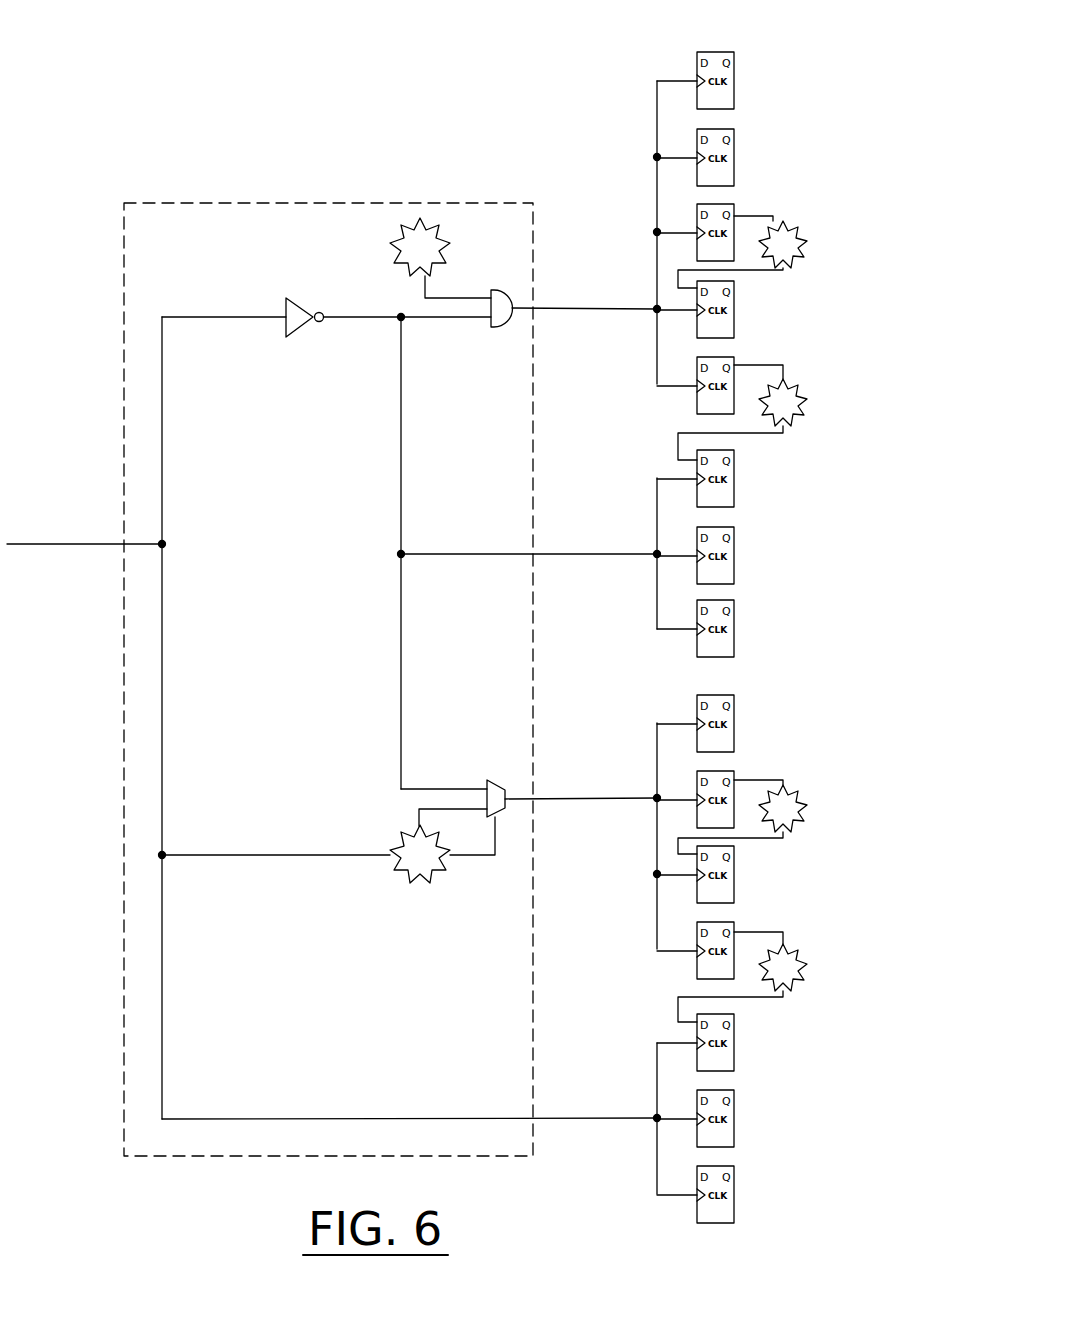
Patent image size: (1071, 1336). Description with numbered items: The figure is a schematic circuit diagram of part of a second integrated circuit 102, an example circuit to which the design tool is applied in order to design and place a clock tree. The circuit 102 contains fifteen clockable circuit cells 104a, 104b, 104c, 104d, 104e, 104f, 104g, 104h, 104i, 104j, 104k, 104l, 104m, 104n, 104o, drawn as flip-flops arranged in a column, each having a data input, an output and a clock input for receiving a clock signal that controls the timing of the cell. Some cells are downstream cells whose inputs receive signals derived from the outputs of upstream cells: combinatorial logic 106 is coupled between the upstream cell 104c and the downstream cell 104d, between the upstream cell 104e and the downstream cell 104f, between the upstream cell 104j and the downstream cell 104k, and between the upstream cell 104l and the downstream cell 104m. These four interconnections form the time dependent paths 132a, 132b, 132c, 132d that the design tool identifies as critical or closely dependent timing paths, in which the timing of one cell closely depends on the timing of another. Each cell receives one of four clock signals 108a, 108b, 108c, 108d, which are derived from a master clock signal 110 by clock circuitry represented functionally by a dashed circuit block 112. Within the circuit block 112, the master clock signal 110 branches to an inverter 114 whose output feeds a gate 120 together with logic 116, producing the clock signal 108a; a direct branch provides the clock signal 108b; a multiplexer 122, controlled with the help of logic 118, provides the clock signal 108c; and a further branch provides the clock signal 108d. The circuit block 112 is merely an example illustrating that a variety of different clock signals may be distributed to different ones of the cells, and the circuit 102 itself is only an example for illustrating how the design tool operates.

The circuit 102 is at (192, 97).
The clockable circuit cell 104a is at (725, 52).
The clockable circuit cell 104b is at (725, 129).
The clockable circuit cell 104c is at (725, 204).
The clockable circuit cell 104d is at (734, 297).
The clockable circuit cell 104e is at (725, 357).
The clockable circuit cell 104f is at (734, 468).
The clockable circuit cell 104g is at (725, 527).
The clockable circuit cell 104h is at (725, 600).
The clockable circuit cell 104i is at (725, 695).
The clockable circuit cell 104j is at (725, 771).
The clockable circuit cell 104k is at (734, 866).
The clockable circuit cell 104l is at (725, 922).
The clockable circuit cell 104m is at (734, 1032).
The clockable circuit cell 104n is at (725, 1090).
The clockable circuit cell 104o is at (725, 1166).
The combinatorial logic 106 is at (800, 242).
The clock signal 108a is at (560, 308).
The clock signal 108b is at (560, 553).
The clock signal 108c is at (560, 798).
The clock signal 108d is at (560, 1118).
The master clock signal 110 is at (97, 543).
The circuit block 112 is at (284, 203).
The inverter 114 is at (304, 298).
The logic 116 is at (452, 247).
The logic 118 is at (445, 874).
The gate 120 is at (497, 328).
The multiplexer 122 is at (498, 776).
The time dependent path 132a is at (773, 216).
The time dependent path 132b is at (783, 365).
The time dependent path 132c is at (783, 838).
The time dependent path 132d is at (783, 997).